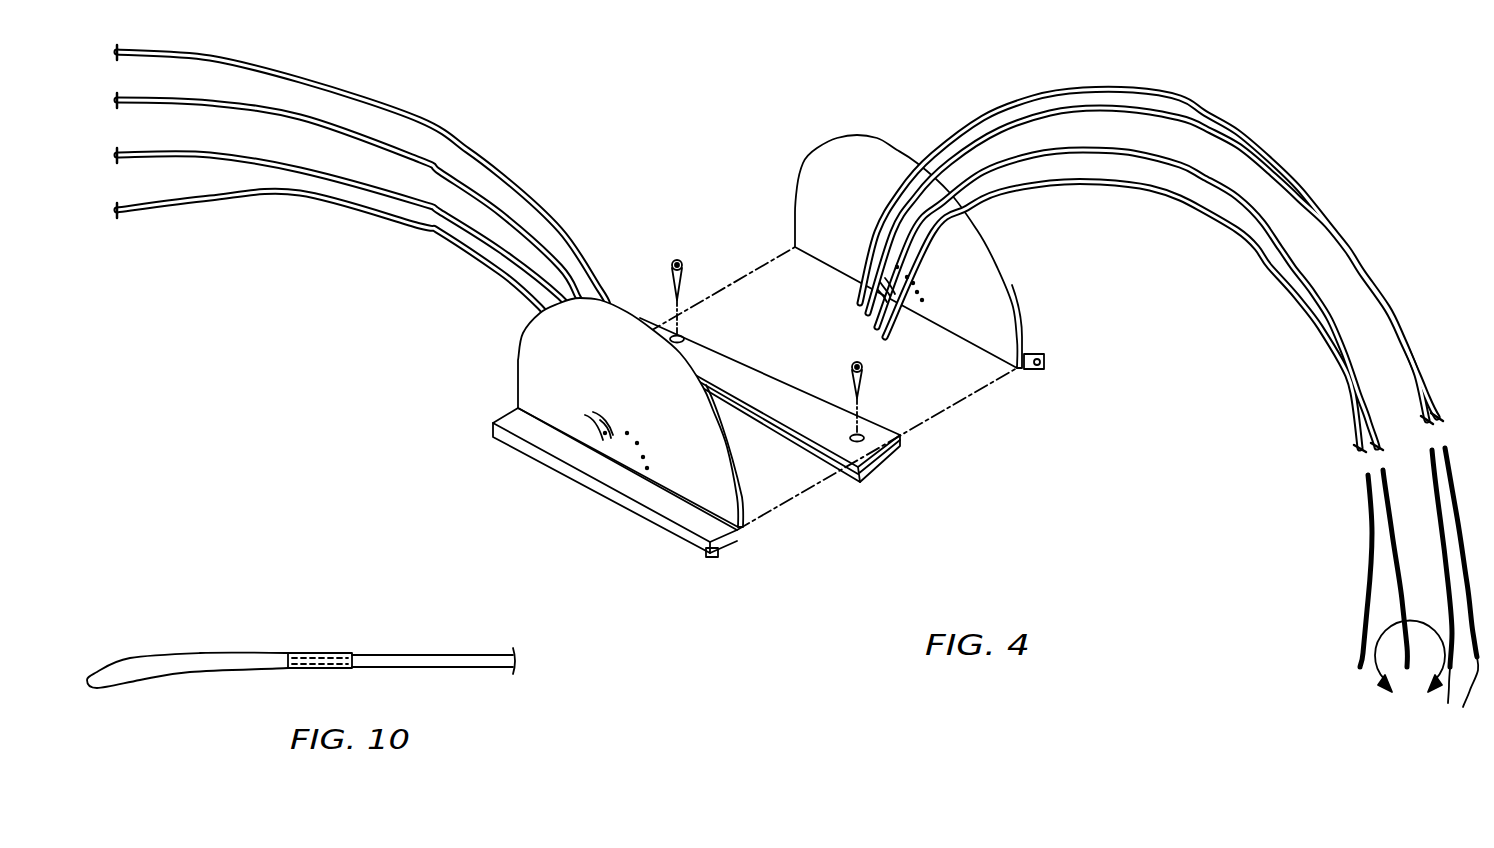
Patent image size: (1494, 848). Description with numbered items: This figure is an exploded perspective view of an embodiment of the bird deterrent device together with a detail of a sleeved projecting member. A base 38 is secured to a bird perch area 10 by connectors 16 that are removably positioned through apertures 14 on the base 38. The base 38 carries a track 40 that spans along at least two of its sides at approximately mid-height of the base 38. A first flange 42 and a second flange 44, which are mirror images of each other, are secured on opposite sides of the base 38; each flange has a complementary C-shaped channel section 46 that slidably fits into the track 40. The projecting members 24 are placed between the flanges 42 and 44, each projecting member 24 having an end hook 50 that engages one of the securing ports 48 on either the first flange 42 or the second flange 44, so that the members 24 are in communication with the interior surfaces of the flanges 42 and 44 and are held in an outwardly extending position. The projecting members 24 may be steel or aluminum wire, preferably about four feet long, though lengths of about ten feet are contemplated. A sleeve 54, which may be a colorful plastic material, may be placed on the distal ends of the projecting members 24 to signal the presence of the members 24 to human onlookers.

In FIG. 4, the bird perch area 10 is at (1410, 668).
In FIG. 4, the apertures 14 is at (684, 336).
In FIG. 4, the connectors 16 is at (683, 263).
In FIG. 4, the projecting members 24 is at (240, 63).
In FIG. 10, the projecting members 24 is at (428, 655).
In FIG. 4, the base 38 is at (773, 365).
In FIG. 4, the track 40 is at (898, 453).
In FIG. 4, the first flange 42 is at (518, 382).
In FIG. 4, the second flange 44 is at (1012, 293).
In FIG. 4, the C-shaped channel section 46 is at (712, 556).
In FIG. 4, the securing ports 48 is at (647, 470).
In FIG. 4, the end hook 50 is at (607, 432).
In FIG. 4, the sleeve 54 is at (1400, 665).
In FIG. 10, the sleeve 54 is at (187, 653).